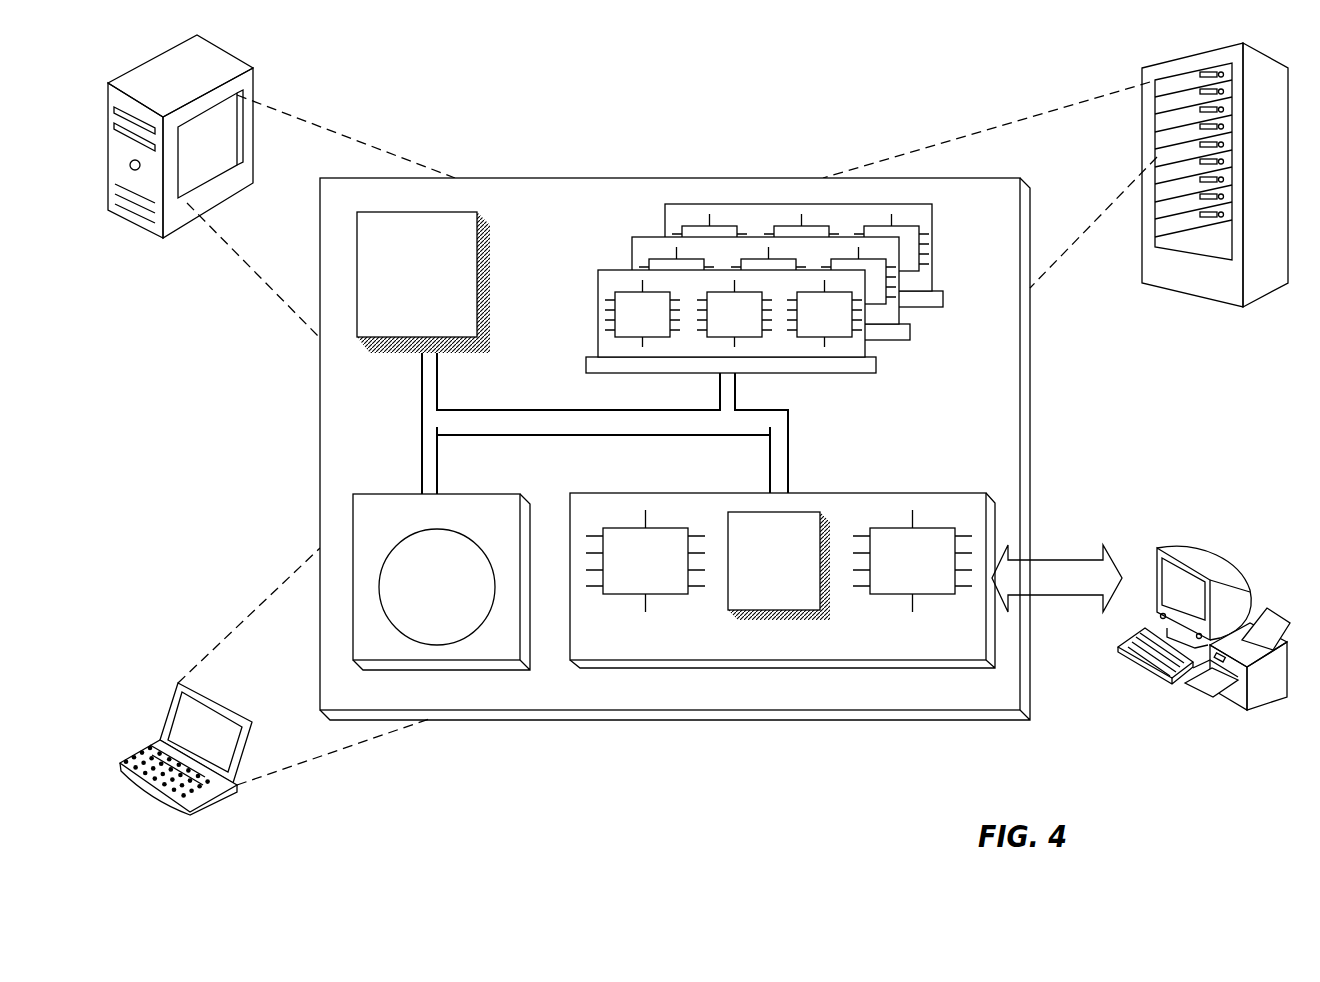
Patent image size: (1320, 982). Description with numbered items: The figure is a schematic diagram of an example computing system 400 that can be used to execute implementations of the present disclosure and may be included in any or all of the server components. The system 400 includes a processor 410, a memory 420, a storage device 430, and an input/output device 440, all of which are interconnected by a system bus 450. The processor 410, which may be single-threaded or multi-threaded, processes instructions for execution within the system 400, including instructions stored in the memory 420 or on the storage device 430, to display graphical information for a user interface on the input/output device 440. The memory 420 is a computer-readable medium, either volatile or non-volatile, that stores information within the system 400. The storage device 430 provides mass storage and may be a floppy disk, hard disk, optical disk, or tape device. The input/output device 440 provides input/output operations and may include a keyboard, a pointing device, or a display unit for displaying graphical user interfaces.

The computing system 400 is at (503, 98).
The processor 410 is at (469, 332).
The memory 420 is at (937, 338).
The storage device 430 is at (511, 653).
The input/output device 440 is at (1156, 552).
The system bus 450 is at (598, 427).